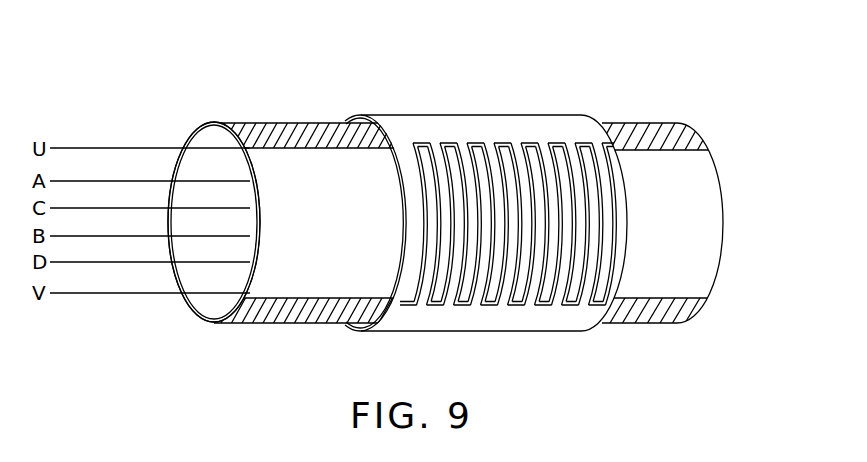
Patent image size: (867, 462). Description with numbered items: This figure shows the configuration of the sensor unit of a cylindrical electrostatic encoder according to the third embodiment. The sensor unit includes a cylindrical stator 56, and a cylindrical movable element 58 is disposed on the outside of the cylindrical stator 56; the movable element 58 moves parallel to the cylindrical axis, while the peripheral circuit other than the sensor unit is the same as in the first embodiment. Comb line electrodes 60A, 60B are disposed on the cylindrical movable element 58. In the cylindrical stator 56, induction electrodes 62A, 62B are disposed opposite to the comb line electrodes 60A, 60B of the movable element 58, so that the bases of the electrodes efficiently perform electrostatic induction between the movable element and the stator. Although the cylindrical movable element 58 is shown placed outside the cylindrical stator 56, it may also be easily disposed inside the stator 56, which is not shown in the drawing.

The cylindrical stator 56 is at (712, 207).
The cylindrical movable element 58 is at (610, 180).
The comb line electrode 60A is at (410, 124).
The comb line electrode 60B is at (413, 318).
The induction electrode 62A is at (673, 137).
The induction electrode 62B is at (642, 323).